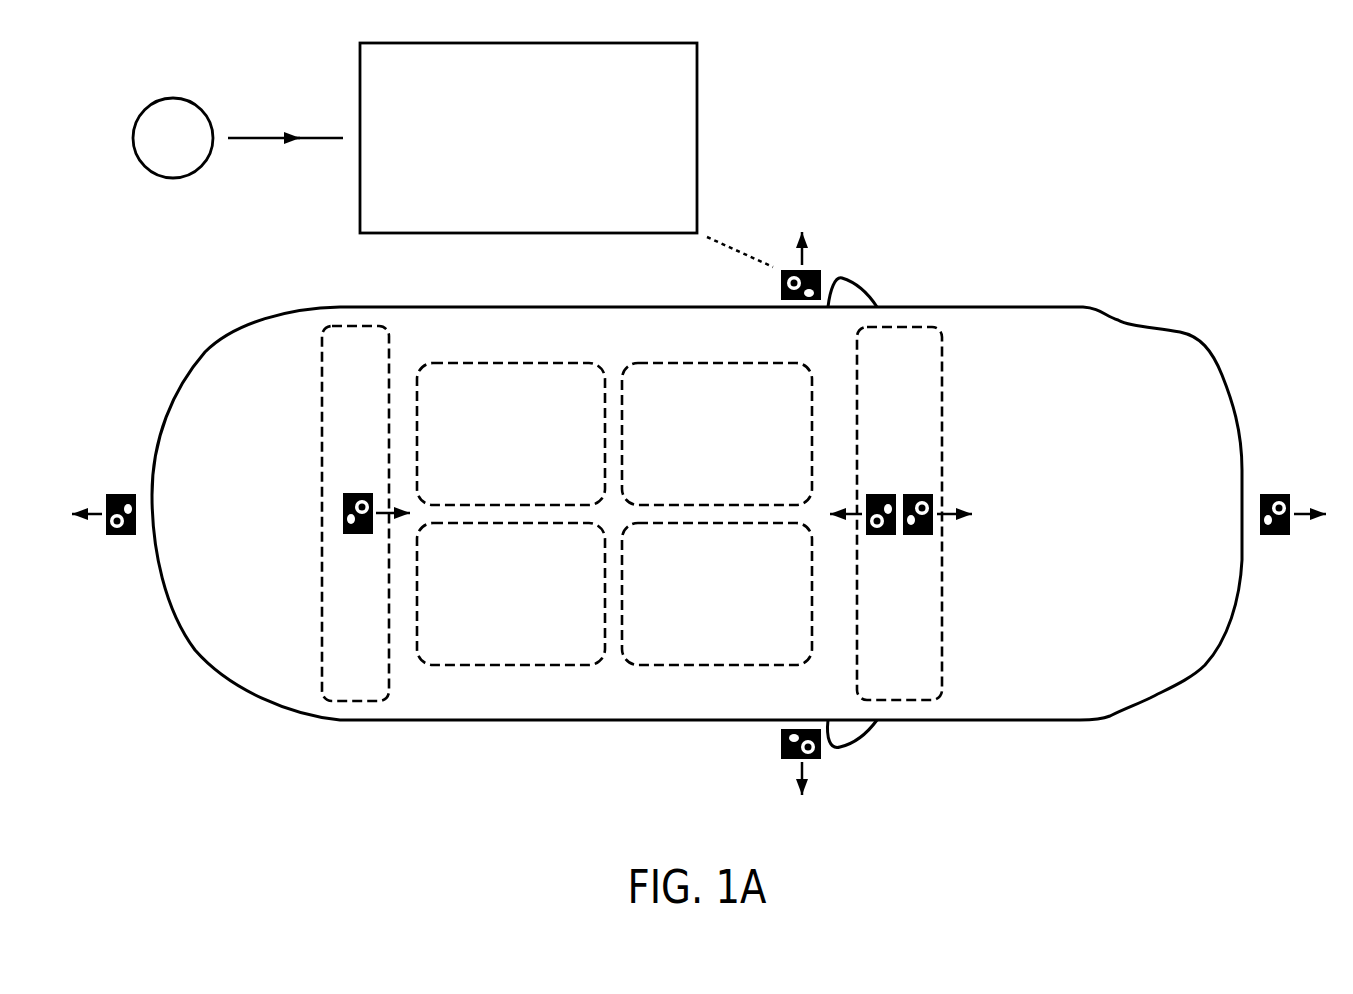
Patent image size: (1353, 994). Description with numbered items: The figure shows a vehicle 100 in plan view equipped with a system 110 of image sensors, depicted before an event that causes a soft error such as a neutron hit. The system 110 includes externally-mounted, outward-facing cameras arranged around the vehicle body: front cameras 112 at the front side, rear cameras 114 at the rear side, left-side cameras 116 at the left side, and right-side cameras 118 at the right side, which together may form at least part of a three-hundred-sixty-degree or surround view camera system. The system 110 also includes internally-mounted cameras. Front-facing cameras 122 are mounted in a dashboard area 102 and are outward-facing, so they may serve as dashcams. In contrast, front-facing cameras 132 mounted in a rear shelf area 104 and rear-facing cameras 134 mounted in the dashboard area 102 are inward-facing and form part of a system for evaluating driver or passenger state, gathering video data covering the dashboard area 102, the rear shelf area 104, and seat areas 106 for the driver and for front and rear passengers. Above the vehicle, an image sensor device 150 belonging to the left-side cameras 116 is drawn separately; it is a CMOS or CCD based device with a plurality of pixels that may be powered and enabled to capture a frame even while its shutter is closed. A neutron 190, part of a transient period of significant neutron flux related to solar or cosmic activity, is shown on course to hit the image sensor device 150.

The vehicle 100 is at (726, 557).
The dashboard area 102 is at (962, 616).
The rear shelf area 104 is at (303, 400).
The seat areas 106 is at (614, 673).
The system 110 is at (1253, 187).
The front cameras 112 is at (1300, 477).
The rear cameras 114 is at (108, 550).
The left-side cameras 116 is at (830, 260).
The right-side cameras 118 is at (764, 758).
The front-facing cameras 122 is at (918, 475).
The front-facing cameras 132 is at (352, 537).
The rear-facing cameras 134 is at (884, 542).
The image sensor device 150 is at (343, 63).
The neutron 190 is at (173, 195).